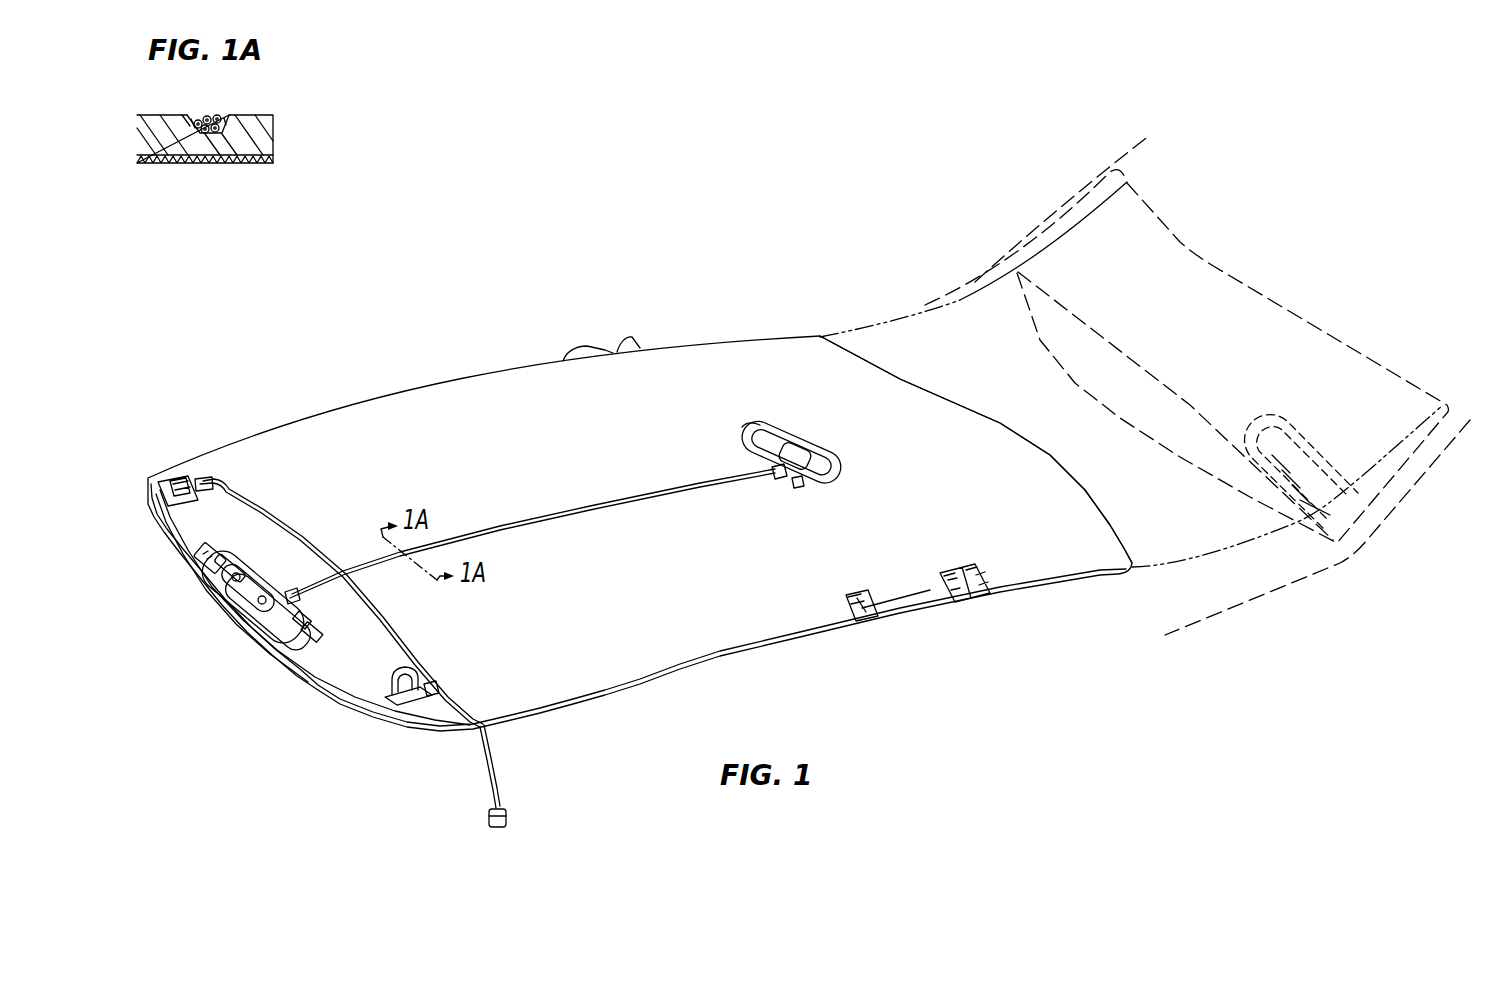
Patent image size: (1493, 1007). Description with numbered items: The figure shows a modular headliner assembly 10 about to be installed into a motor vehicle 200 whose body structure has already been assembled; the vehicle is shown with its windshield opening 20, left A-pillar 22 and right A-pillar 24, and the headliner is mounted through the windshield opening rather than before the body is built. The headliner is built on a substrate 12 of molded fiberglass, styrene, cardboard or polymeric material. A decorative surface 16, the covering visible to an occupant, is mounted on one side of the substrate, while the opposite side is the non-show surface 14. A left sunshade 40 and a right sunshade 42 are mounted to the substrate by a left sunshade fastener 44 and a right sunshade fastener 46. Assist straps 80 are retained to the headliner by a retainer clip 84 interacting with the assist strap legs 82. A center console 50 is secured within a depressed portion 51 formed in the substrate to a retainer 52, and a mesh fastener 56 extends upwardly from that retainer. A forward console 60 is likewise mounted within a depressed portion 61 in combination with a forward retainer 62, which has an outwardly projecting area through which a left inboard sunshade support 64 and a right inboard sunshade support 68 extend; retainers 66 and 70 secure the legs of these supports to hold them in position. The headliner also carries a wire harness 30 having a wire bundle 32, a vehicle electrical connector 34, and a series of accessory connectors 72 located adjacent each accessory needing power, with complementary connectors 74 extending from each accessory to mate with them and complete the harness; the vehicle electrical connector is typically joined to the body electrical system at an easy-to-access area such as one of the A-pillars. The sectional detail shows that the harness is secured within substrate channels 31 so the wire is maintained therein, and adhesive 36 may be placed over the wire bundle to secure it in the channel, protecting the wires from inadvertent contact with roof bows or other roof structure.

In FIG. 1, the modular headliner assembly 10 is at (882, 702).
In FIG. 1A, the substrate 12 is at (272, 135).
In FIG. 1, the substrate 12 is at (716, 657).
In FIG. 1A, the non-show surface 14 is at (262, 117).
In FIG. 1, the non-show surface 14 is at (1092, 520).
In FIG. 1A, the decorative surface 16 is at (266, 165).
In FIG. 1, the decorative surface 16 is at (1073, 587).
In FIG. 1, the windshield opening 20 is at (1194, 254).
In FIG. 1, the left A-pillar 22 is at (1410, 495).
In FIG. 1, the right A-pillar 24 is at (1087, 192).
In FIG. 1, the motor vehicle 200 is at (1024, 231).
In FIG. 1A, the wire harness 30 is at (208, 113).
In FIG. 1, the wire harness 30 is at (591, 508).
In FIG. 1A, the substrate channels 31 is at (203, 135).
In FIG. 1, the wire bundle 32 is at (501, 777).
In FIG. 1, the vehicle electrical connector 34 is at (508, 818).
In FIG. 1A, the adhesive 36 is at (220, 115).
In FIG. 1, the left sunshade 40 is at (334, 705).
In FIG. 1, the right sunshade 42 is at (172, 573).
In FIG. 1, the left sunshade fastener 44 is at (390, 679).
In FIG. 1, the right sunshade fastener 46 is at (167, 483).
In FIG. 1, the center console 50 is at (810, 457).
In FIG. 1, the depressed portion 51 is at (763, 428).
In FIG. 1, the retainer 52 is at (789, 430).
In FIG. 1, the mesh fastener 56 is at (792, 447).
In FIG. 1, the forward console 60 is at (233, 603).
In FIG. 1, the depressed portion 61 is at (241, 567).
In FIG. 1, the forward retainer 62 is at (250, 620).
In FIG. 1, the left inboard sunshade support 64 is at (306, 620).
In FIG. 1, the retainer 66 is at (316, 633).
In FIG. 1, the right inboard sunshade support 68 is at (208, 548).
In FIG. 1, the retainer 70 is at (221, 557).
In FIG. 1, the accessory connectors 72 is at (197, 479).
In FIG. 1, the complementary connectors 74 is at (797, 484).
In FIG. 1, the assist straps 80 is at (978, 603).
In FIG. 1, the assist strap legs 82 is at (640, 347).
In FIG. 1, the retainer clip 84 is at (853, 593).